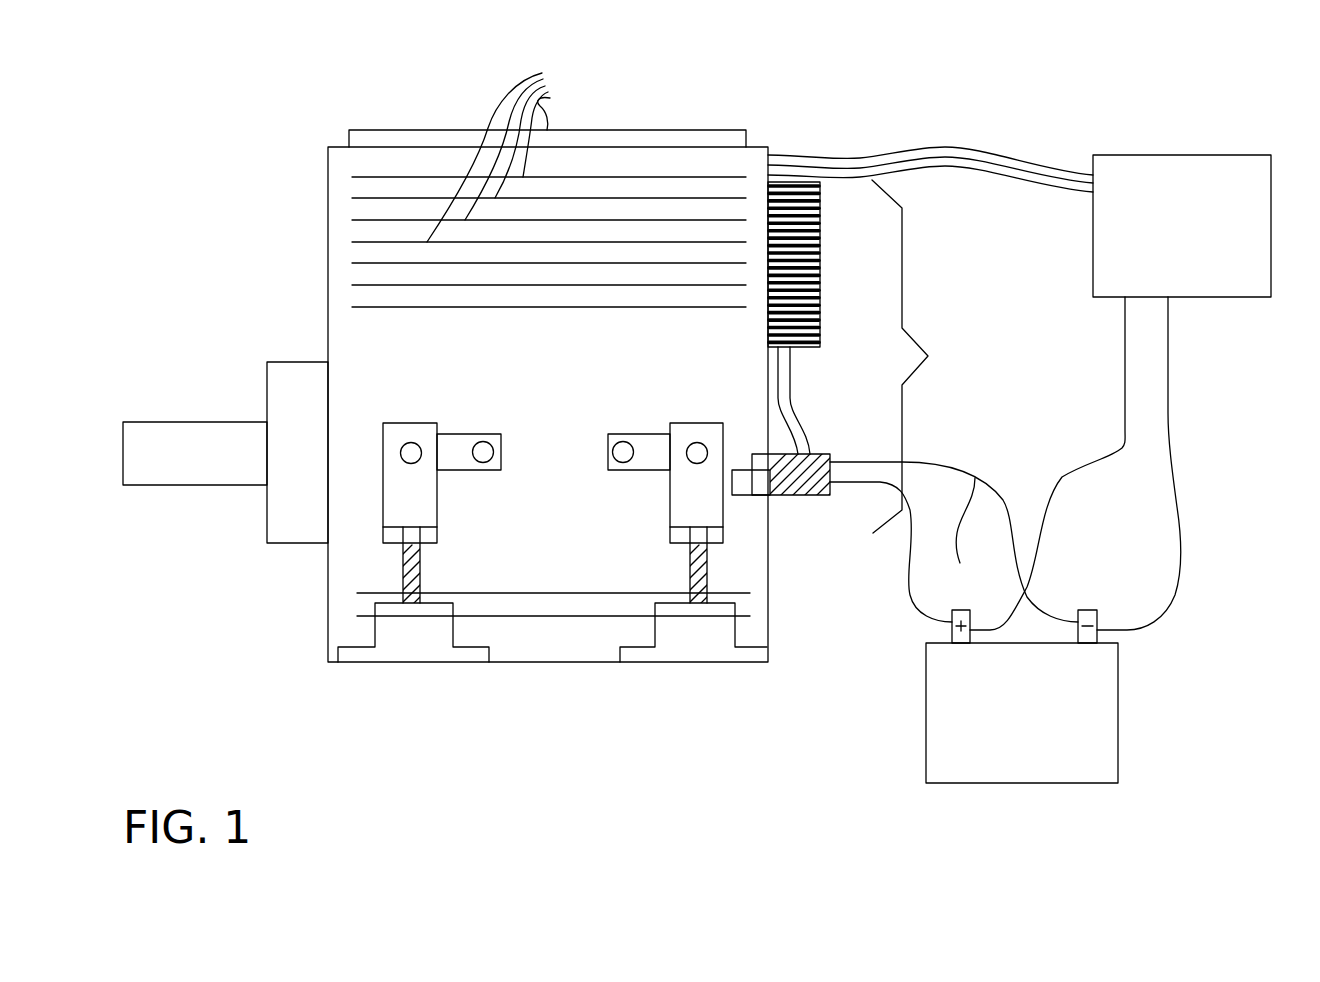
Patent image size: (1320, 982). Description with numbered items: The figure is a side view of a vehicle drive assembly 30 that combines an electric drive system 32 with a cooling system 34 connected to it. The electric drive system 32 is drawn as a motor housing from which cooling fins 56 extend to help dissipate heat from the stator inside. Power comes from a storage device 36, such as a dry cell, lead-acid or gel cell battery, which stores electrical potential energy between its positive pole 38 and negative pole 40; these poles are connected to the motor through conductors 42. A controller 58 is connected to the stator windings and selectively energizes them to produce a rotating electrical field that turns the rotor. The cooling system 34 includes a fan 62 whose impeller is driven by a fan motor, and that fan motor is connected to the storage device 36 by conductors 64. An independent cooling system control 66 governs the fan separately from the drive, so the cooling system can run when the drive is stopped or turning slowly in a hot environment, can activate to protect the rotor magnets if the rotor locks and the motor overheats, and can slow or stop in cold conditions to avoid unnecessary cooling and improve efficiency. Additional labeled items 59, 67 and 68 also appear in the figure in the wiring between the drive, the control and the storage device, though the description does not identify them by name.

The vehicle drive assembly 30 is at (286, 703).
The electric drive system 32 is at (326, 566).
The cooling system 34 is at (924, 356).
The storage device 36 is at (1043, 783).
The positive pole 38 is at (951, 630).
The negative pole 40 is at (1098, 614).
The conductors 42 is at (860, 176).
The cooling fins 56 is at (507, 154).
The controller 58 is at (1198, 244).
The power wires 59 is at (1083, 470).
The fan 62 is at (818, 286).
The conductors 64 is at (777, 387).
The independent cooling system control 66 is at (758, 453).
The wire 67 is at (910, 527).
The terminal 68 is at (748, 495).